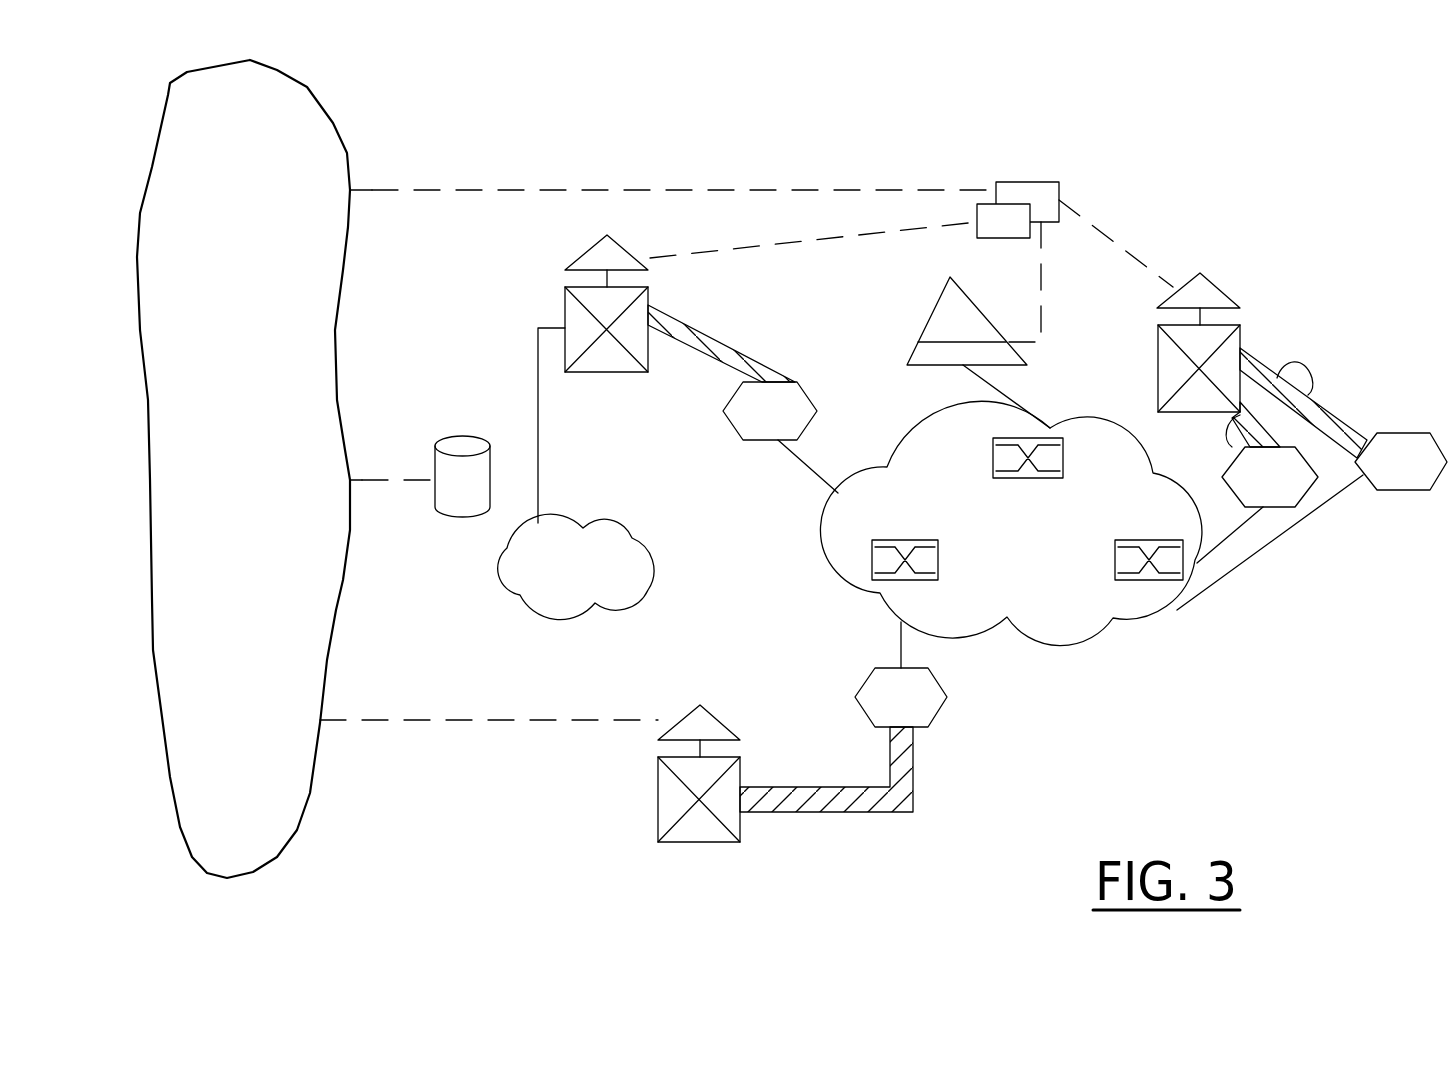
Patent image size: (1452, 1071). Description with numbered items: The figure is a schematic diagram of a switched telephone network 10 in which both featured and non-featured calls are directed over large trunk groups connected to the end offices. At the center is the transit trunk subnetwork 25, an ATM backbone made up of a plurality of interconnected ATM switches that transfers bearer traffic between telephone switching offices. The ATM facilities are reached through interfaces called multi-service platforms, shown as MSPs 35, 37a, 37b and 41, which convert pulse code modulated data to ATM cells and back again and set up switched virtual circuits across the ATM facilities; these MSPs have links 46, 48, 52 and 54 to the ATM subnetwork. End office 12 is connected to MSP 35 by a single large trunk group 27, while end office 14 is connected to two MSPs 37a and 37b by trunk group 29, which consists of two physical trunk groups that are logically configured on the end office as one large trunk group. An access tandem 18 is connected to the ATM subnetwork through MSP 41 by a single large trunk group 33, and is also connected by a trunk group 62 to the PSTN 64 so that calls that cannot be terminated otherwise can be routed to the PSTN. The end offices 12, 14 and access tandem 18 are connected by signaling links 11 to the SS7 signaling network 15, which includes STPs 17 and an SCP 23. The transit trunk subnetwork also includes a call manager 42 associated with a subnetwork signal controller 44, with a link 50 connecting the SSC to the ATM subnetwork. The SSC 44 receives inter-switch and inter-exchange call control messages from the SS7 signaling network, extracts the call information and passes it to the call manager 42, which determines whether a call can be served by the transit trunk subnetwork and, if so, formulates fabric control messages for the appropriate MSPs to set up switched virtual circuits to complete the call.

The network 10 is at (566, 869).
The signaling links 11 is at (848, 190).
The end office 12 is at (714, 717).
The end office 14 is at (1220, 287).
The SS7 signaling network 15 is at (184, 865).
The STPs 17 is at (1036, 182).
The access tandem 18 is at (577, 262).
The SCP 23 is at (450, 436).
The transit trunk subnetwork 25 is at (1118, 655).
The trunk group 27 is at (823, 787).
The trunk group 29 is at (1310, 372).
The trunk group 33 is at (715, 338).
The multi-service platform 35 is at (947, 697).
The multi-service platform 37a is at (1390, 433).
The multi-service platform 37b is at (1220, 480).
The multi-service platform 41 is at (812, 405).
The call manager 42 is at (937, 303).
The subnetwork signal controller 44 is at (910, 355).
The link 46 is at (901, 636).
The link 48 is at (1277, 538).
The link 50 is at (1000, 396).
The link 52 is at (800, 466).
The link 54 is at (1225, 540).
The trunk group 62 is at (538, 468).
The PSTN 64 is at (569, 612).